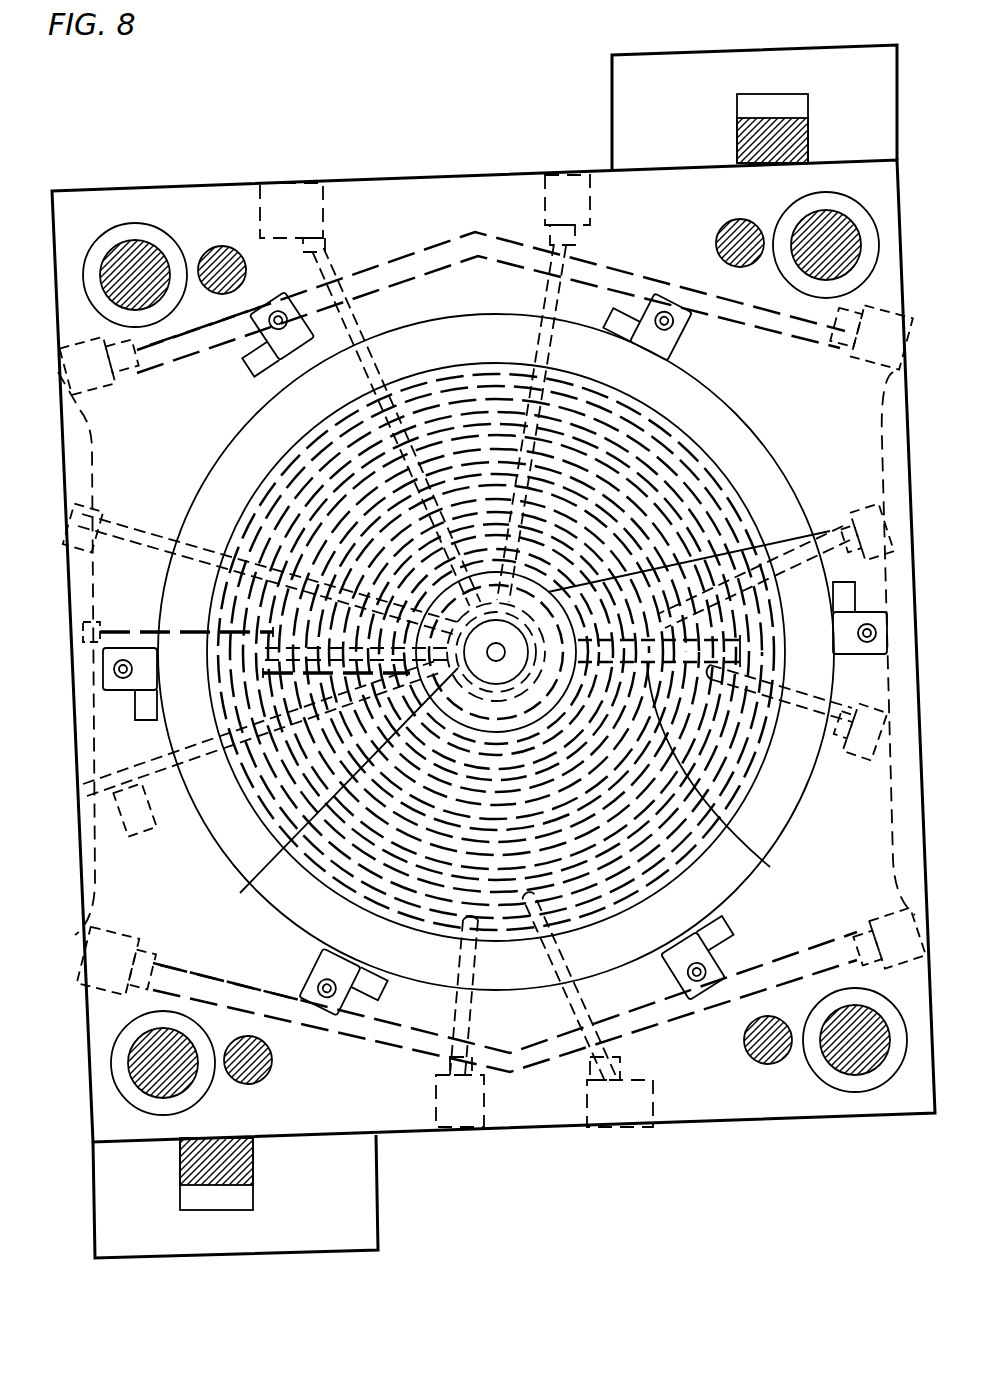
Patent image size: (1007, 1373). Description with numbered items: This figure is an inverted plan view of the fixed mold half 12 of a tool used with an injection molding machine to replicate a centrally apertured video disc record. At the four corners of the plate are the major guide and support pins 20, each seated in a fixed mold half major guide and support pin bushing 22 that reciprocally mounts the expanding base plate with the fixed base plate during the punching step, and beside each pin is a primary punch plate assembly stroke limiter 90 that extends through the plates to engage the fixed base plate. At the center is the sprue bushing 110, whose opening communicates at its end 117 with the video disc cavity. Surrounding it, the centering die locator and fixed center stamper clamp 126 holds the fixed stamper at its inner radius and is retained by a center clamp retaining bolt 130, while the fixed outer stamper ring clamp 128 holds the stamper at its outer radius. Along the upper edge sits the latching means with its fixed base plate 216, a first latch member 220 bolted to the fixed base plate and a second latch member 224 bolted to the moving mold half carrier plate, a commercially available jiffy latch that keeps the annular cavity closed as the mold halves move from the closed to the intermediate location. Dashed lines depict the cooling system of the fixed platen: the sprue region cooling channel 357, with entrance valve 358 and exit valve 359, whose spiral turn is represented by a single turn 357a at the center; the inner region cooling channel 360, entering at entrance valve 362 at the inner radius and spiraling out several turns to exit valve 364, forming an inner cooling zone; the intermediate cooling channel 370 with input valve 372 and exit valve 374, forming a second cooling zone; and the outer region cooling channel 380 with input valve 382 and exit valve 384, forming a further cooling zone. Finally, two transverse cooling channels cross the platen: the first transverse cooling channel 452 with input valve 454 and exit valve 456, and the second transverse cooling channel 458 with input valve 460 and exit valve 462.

The fixed mold half 12 is at (222, 106).
The fixed base plate 216 is at (612, 100).
The first latch member 220 is at (808, 102).
The second latch member 224 is at (737, 150).
The fixed mold half major guide and support pin bushing 22 is at (97, 240).
The major guide and support pin 20 is at (142, 242).
The primary punch plate assembly stroke limiter 90 is at (225, 252).
The fixed outer stamper ring clamp 128 is at (700, 392).
The centering die locator and fixed center stamper clamp 126 is at (755, 462).
The sprue bushing 110 is at (246, 880).
The end of sprue bushing opening 117 is at (501, 650).
The single turn 357a is at (470, 694).
The center clamp retaining bolt 130 is at (752, 846).
The exit valve 359 is at (326, 215).
The entrance valve 358 is at (590, 210).
The fixed platen sprue region cooling channel 357 is at (548, 292).
The exit valve 384 is at (436, 1095).
The input valve 382 is at (650, 1083).
The fixed platen outer region cooling channel 380 is at (600, 1008).
The fixed platen inner region cooling channel 360 is at (136, 615).
The exit valve 364 is at (115, 518).
The entrance valve 362 is at (133, 822).
The input valve 372 is at (868, 500).
The fixed platen intermediate cooling channel 370 is at (838, 525).
The exit valve 374 is at (862, 752).
The input valve 454 is at (110, 385).
The first fixed platen transverse cooling channel 452 is at (182, 352).
The exit valve 456 is at (850, 358).
The input valve 460 is at (140, 944).
The second fixed platen transverse cooling channel 458 is at (222, 982).
The exit valve 462 is at (882, 918).